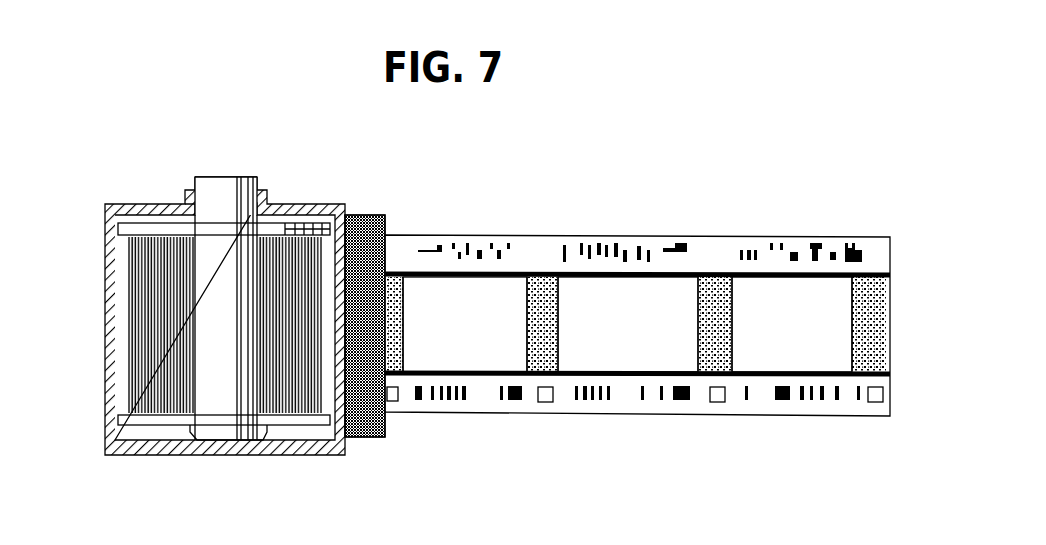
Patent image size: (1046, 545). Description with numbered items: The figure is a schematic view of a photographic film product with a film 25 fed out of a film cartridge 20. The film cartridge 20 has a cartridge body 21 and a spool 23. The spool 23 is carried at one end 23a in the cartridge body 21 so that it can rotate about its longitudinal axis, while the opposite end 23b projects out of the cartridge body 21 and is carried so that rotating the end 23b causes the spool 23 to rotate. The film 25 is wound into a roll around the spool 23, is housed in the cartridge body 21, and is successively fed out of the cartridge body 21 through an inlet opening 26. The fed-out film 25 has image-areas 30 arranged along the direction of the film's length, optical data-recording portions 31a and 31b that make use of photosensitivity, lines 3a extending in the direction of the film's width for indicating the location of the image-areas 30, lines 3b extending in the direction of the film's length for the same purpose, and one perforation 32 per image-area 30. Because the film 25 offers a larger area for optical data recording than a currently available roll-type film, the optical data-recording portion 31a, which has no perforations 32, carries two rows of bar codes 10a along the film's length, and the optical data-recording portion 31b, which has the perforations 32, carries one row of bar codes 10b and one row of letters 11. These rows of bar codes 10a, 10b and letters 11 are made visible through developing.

The film cartridge 20 is at (352, 200).
The cartridge body 21 is at (108, 205).
The spool 23 is at (203, 202).
The one end of the spool 23a is at (225, 440).
The opposite end of the spool 23b is at (232, 190).
The film 25 is at (152, 243).
The inlet opening 26 is at (387, 428).
The lines extending in the direction of the film's width 3a is at (520, 285).
The lines extending in the direction of the film's length 3b is at (615, 277).
The bar codes 10a is at (568, 252).
The bar codes 10b is at (613, 400).
The optical data-recording portion 31a is at (662, 246).
The optical data-recording portion 31b is at (477, 395).
The perforation 32 is at (543, 412).
The image-areas 30 is at (657, 357).
The letters 11 is at (828, 416).